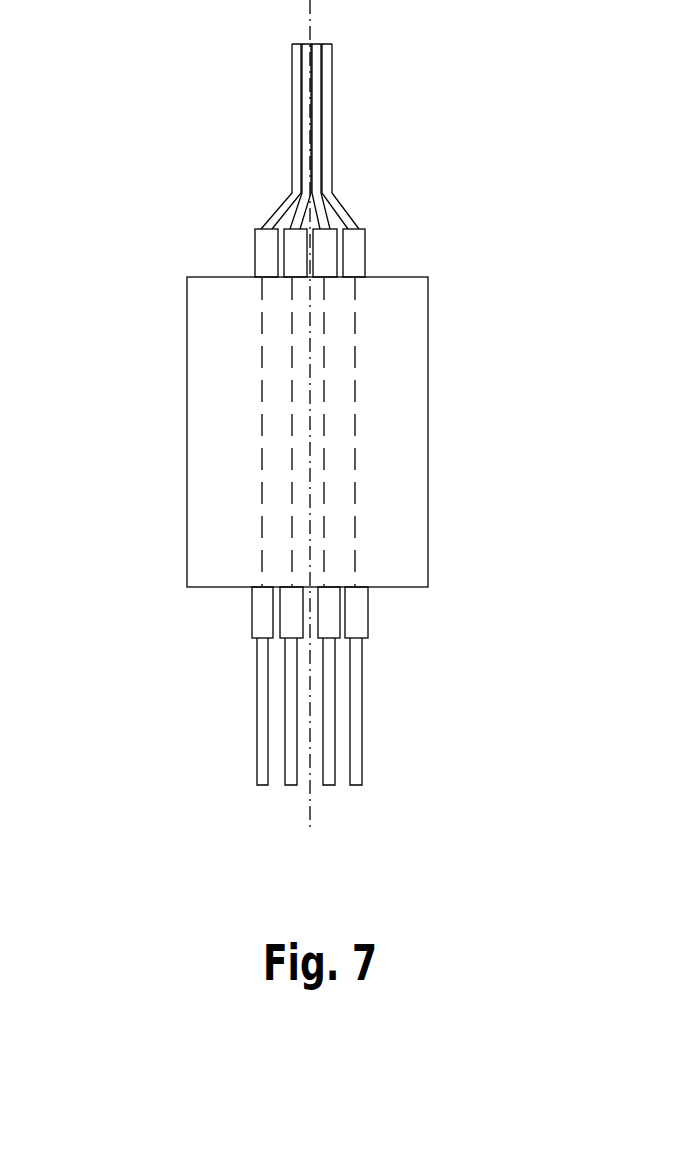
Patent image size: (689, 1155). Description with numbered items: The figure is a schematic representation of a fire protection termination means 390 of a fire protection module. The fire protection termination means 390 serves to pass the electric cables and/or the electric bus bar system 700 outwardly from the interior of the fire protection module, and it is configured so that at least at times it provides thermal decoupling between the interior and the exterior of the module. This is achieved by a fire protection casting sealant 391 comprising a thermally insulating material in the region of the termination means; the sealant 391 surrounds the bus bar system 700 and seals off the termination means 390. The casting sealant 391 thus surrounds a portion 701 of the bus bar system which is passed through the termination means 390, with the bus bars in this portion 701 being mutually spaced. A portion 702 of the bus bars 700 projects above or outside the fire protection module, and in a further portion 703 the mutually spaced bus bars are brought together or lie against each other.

The fire protection termination means 390 is at (336, 387).
The fire protection casting sealant 391 is at (226, 308).
The electric bus bar system 700 is at (362, 783).
The portion of the bus bar system passed through the termination means 701 is at (252, 439).
The portion of the bus bars projecting outside the module 702 is at (358, 253).
The portion where the bus bars are brought together 703 is at (325, 104).